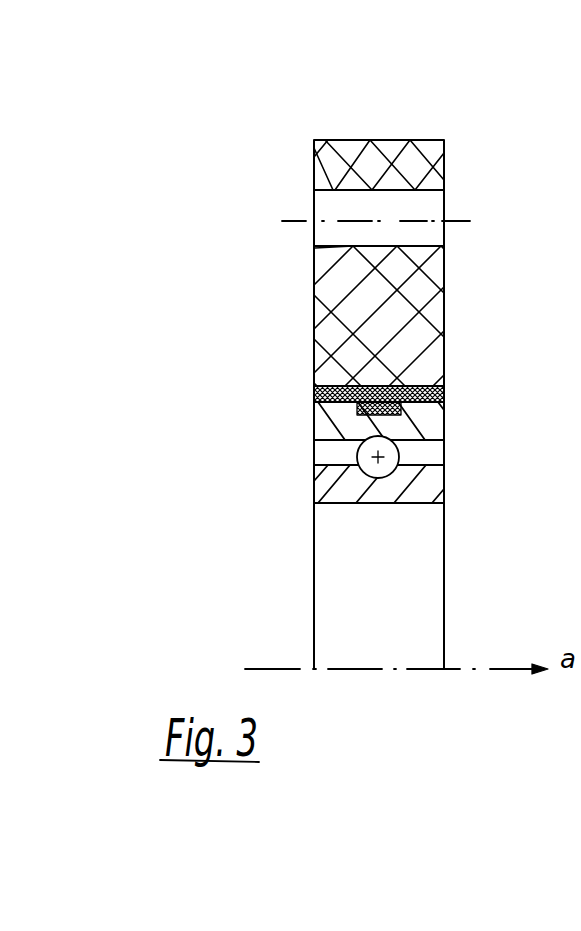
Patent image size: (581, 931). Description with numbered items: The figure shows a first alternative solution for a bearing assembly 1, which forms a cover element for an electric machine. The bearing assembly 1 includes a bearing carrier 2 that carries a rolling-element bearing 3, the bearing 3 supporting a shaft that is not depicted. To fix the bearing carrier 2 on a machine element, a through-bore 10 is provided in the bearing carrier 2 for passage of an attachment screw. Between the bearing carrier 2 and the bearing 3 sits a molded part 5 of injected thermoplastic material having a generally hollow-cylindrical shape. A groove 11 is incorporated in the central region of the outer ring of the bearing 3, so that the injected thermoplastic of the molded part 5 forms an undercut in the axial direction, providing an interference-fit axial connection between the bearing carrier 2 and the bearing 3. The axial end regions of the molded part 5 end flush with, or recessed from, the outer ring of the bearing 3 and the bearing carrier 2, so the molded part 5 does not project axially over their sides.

The bearing assembly 1 is at (233, 119).
The bearing carrier 2 is at (432, 156).
The rolling-element bearing 3 is at (334, 454).
The molded part 5 is at (445, 394).
The through-bore 10 is at (330, 213).
The groove 11 is at (410, 407).